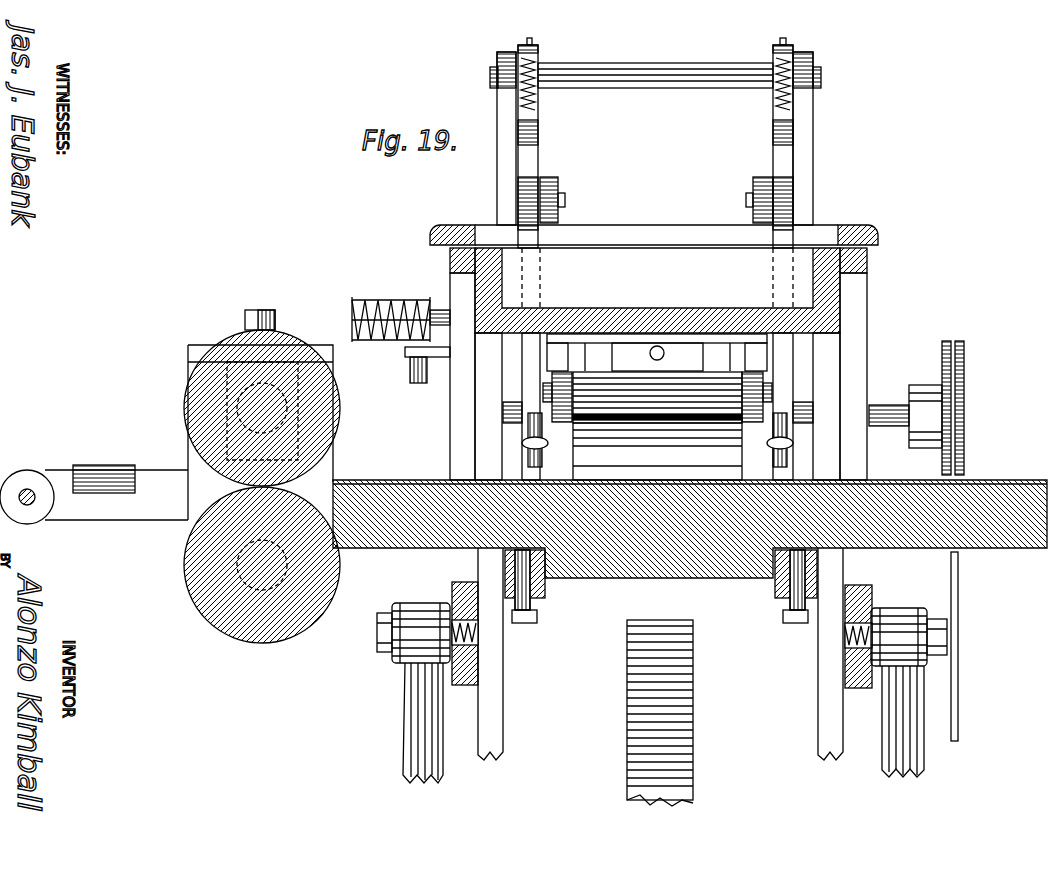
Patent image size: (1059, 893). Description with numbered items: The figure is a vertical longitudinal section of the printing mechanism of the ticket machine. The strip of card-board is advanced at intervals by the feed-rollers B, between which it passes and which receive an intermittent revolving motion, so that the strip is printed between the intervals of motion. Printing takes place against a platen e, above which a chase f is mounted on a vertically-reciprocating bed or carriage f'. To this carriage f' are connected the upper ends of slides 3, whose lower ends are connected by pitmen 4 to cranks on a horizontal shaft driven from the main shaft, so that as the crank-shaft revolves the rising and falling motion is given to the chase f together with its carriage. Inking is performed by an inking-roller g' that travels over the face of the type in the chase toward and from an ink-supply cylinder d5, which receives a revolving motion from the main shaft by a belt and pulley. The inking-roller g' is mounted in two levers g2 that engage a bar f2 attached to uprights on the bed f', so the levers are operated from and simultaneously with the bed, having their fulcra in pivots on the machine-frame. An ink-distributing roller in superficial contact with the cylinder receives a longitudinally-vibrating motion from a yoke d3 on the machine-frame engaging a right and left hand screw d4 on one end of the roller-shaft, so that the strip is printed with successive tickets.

The bar f2 is at (655, 64).
The levers g2 is at (538, 160).
The vertically-reciprocating bed or carriage f' is at (658, 290).
The chase f is at (657, 352).
The inking-roller g' is at (657, 397).
The ink-supply cylinder d5 is at (657, 451).
The right and left hand screw d4 is at (401, 305).
The yoke d3 is at (432, 356).
The slides 3 is at (658, 516).
The feed-rollers B is at (180, 476).
The platen e is at (690, 517).
The pitmen 4 is at (662, 693).